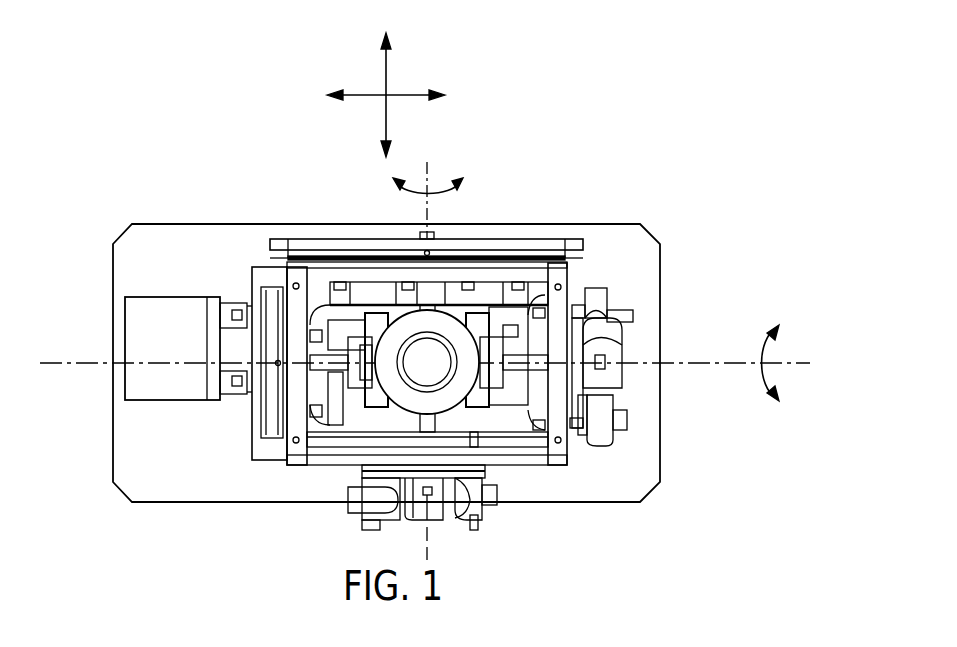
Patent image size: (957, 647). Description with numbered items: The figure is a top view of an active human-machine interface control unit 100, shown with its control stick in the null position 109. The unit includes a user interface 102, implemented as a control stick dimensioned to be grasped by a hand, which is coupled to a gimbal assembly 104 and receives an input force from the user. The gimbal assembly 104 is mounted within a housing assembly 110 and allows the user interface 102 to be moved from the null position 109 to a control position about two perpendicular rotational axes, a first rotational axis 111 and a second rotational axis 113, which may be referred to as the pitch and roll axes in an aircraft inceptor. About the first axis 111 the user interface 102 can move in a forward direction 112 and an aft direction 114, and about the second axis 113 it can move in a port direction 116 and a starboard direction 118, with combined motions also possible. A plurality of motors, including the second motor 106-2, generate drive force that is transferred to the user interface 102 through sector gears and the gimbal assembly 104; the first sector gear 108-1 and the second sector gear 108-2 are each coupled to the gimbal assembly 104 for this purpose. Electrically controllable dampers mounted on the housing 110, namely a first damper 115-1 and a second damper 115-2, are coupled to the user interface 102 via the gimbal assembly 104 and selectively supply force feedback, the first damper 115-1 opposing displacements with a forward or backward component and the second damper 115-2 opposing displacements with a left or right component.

The active human-machine interface control unit 100 is at (622, 200).
The user interface 102 is at (448, 320).
The gimbal assembly 104 is at (321, 296).
The second motor 106-2 is at (180, 312).
The first sector gear 108-1 is at (326, 228).
The second sector gear 108-2 is at (270, 450).
The null position 109 is at (400, 84).
The housing assembly 110 is at (652, 263).
The first rotational axis 111 is at (427, 168).
The forward direction 112 is at (403, 97).
The second rotational axis 113 is at (797, 363).
The aft direction 114 is at (362, 93).
The first damper 115-1 is at (470, 500).
The second damper 115-2 is at (613, 348).
The port direction 116 is at (388, 62).
The starboard direction 118 is at (382, 120).